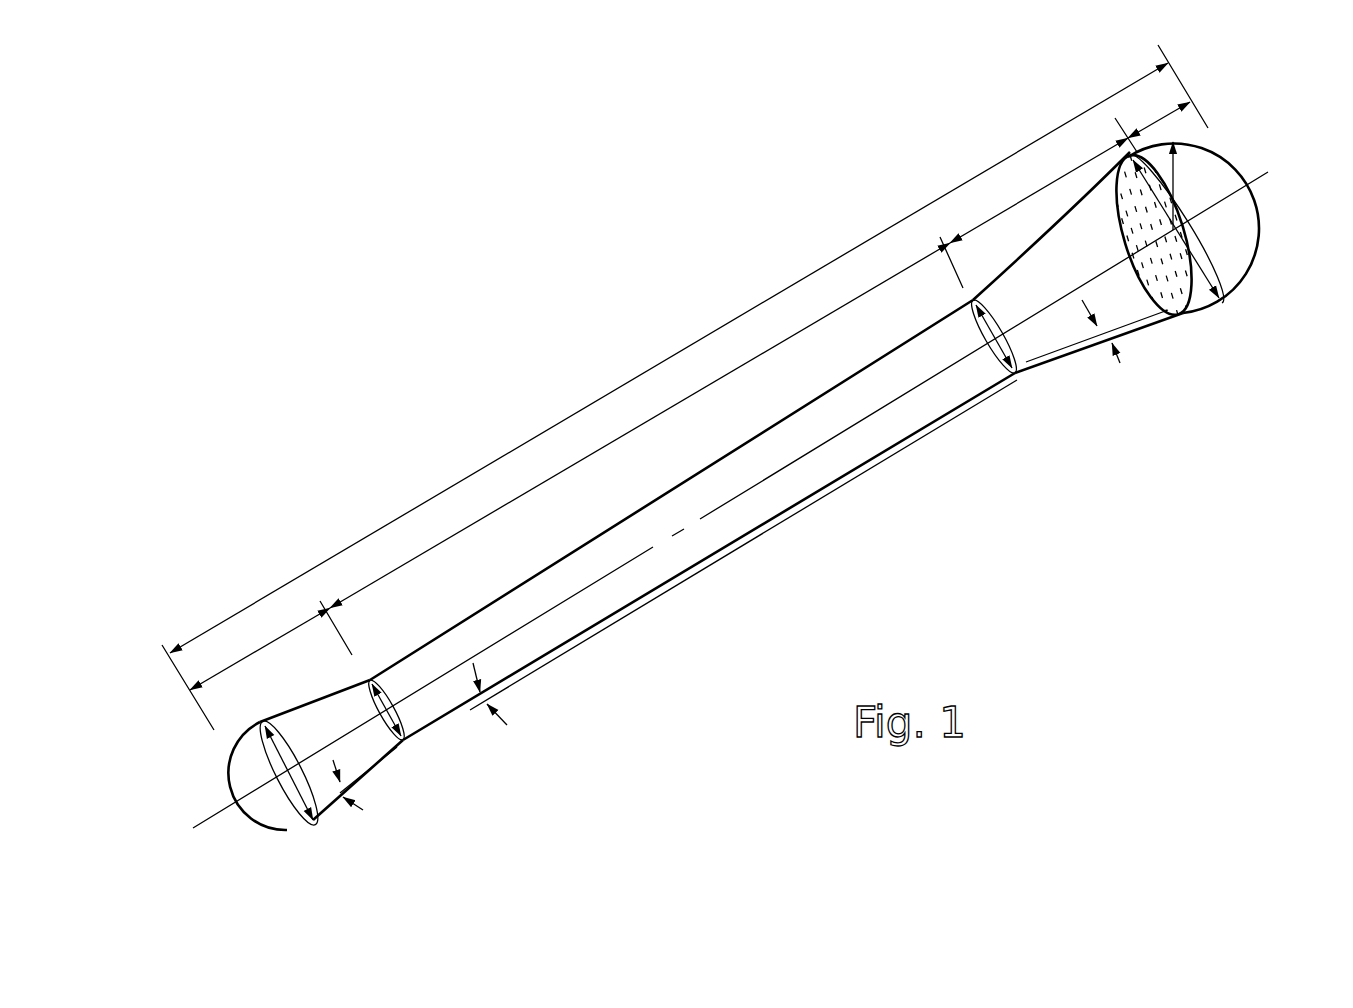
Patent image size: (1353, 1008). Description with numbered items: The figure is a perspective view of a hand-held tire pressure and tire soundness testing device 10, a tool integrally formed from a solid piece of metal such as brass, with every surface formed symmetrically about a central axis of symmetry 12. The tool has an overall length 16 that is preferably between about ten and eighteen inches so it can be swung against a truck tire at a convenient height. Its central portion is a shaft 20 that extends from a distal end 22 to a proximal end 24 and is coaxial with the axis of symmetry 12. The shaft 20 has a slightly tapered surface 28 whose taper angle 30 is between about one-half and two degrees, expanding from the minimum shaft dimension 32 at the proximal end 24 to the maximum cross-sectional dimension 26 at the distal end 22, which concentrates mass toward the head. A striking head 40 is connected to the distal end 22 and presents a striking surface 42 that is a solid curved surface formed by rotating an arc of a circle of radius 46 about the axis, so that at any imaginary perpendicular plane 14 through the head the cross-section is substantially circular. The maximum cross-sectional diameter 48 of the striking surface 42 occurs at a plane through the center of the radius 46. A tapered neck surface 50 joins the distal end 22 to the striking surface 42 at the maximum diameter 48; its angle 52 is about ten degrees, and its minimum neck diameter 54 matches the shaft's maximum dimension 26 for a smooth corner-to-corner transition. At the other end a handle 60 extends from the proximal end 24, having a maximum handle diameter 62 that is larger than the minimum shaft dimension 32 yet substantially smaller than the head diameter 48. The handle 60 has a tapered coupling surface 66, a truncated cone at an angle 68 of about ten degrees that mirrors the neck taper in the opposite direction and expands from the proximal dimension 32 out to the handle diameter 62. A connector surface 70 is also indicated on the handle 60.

The hand-held tire pressure and soundness testing device 10 is at (580, 318).
The axis of symmetry 12 is at (740, 495).
The imaginary perpendicular plane 14 is at (1185, 315).
The overall length 16 is at (538, 438).
The shaft 20 is at (768, 430).
The distal end 22 is at (1012, 372).
The proximal end 24 is at (405, 742).
The maximum cross-sectional dimension 26 is at (1000, 372).
The tapered surface 28 is at (578, 642).
The taper angle 30 is at (490, 697).
The minimum shaft dimension 32 is at (386, 678).
The striking head 40 is at (1123, 170).
The striking surface 42 is at (1235, 242).
The radius 46 is at (1182, 172).
The maximum cross-sectional diameter 48 is at (1228, 294).
The tapered neck surface 50 is at (1080, 353).
The angle of the truncated conical neck 52 is at (1115, 355).
The minimum neck diameter 54 is at (988, 312).
The handle 60 is at (258, 745).
The maximum handle diameter 62 is at (297, 803).
The tapered coupling surface 66 is at (367, 780).
The angle 68 is at (340, 813).
The connector surface 70 is at (303, 833).